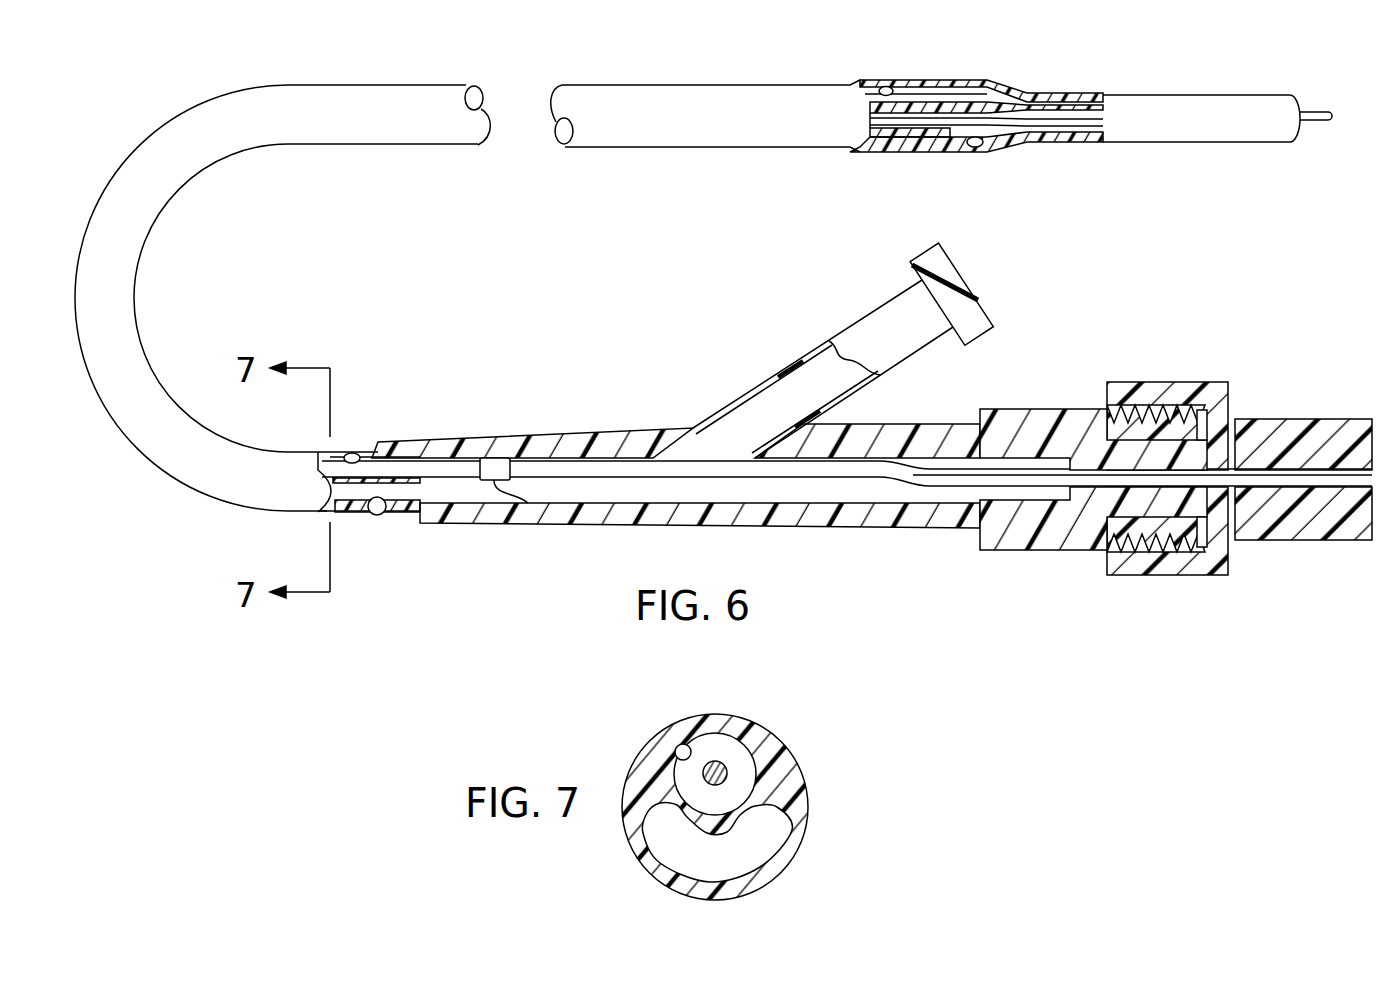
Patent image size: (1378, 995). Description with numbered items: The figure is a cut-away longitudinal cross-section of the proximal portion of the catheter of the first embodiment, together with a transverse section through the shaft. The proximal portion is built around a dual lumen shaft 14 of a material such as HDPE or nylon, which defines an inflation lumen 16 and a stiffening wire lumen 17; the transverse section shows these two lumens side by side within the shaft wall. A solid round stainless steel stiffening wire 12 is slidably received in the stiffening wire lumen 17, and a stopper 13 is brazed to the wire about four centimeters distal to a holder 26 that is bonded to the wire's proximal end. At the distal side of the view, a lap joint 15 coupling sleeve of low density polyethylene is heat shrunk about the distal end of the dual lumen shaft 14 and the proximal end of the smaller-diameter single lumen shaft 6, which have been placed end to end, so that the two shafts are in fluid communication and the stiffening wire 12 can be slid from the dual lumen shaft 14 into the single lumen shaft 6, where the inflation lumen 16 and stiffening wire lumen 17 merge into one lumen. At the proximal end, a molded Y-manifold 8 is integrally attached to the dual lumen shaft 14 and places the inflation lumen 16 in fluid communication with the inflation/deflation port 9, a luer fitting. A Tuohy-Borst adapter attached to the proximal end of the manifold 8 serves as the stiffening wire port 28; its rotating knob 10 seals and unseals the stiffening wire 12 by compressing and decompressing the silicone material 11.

In FIG. 6, the single lumen shaft 6 is at (1190, 95).
In FIG. 6, the molded Y-manifold 8 is at (545, 437).
In FIG. 6, the inflation/deflation port 9 is at (975, 290).
In FIG. 6, the rotating knob 10 is at (1150, 382).
In FIG. 6, the silicone material 11 is at (1050, 550).
In FIG. 6, the stiffening wire 12 is at (937, 150).
In FIG. 7, the stiffening wire 12 is at (730, 773).
In FIG. 6, the stopper 13 is at (492, 481).
In FIG. 6, the dual lumen shaft 14 is at (705, 84).
In FIG. 7, the dual lumen shaft 14 is at (804, 843).
In FIG. 6, the lap joint coupling sleeve 15 is at (950, 80).
In FIG. 6, the inflation lumen 16 is at (889, 87).
In FIG. 7, the inflation lumen 16 is at (660, 853).
In FIG. 6, the stiffening wire lumen 17 is at (975, 147).
In FIG. 7, the stiffening wire lumen 17 is at (681, 746).
In FIG. 6, the holder 26 is at (1300, 540).
In FIG. 6, the stiffening wire port 28 is at (1218, 460).